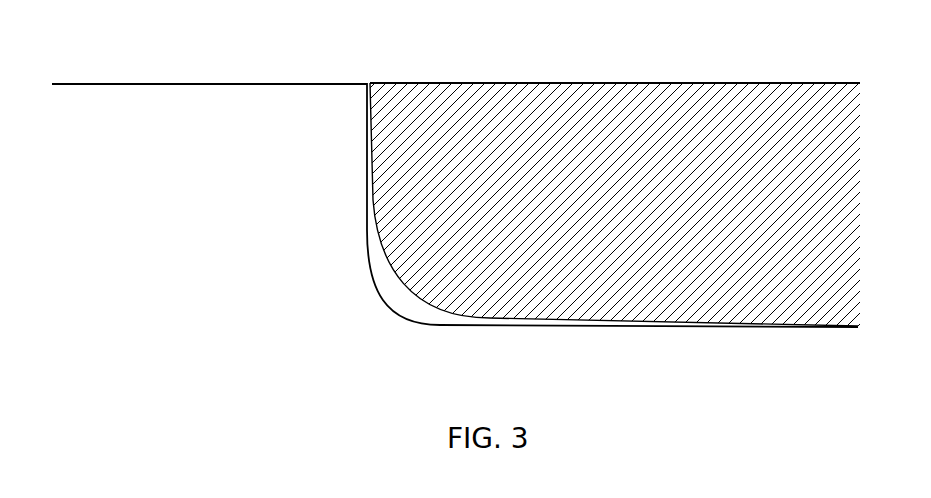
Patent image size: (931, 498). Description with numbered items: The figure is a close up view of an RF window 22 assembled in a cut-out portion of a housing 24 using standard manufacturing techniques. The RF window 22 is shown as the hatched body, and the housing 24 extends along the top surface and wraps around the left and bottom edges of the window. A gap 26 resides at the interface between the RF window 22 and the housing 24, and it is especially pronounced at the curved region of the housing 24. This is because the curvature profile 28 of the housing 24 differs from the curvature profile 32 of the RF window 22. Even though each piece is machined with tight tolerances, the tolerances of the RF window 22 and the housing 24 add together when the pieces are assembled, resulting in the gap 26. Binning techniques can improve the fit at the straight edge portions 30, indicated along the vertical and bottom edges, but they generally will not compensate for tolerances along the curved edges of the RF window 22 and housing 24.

The RF window 22 is at (662, 102).
The housing 24 is at (243, 100).
The gap 26 is at (387, 310).
The curvature profile of housing 28 is at (385, 293).
The straight edge portions 30 is at (342, 143).
The curvature profile of RF window 32 is at (413, 292).